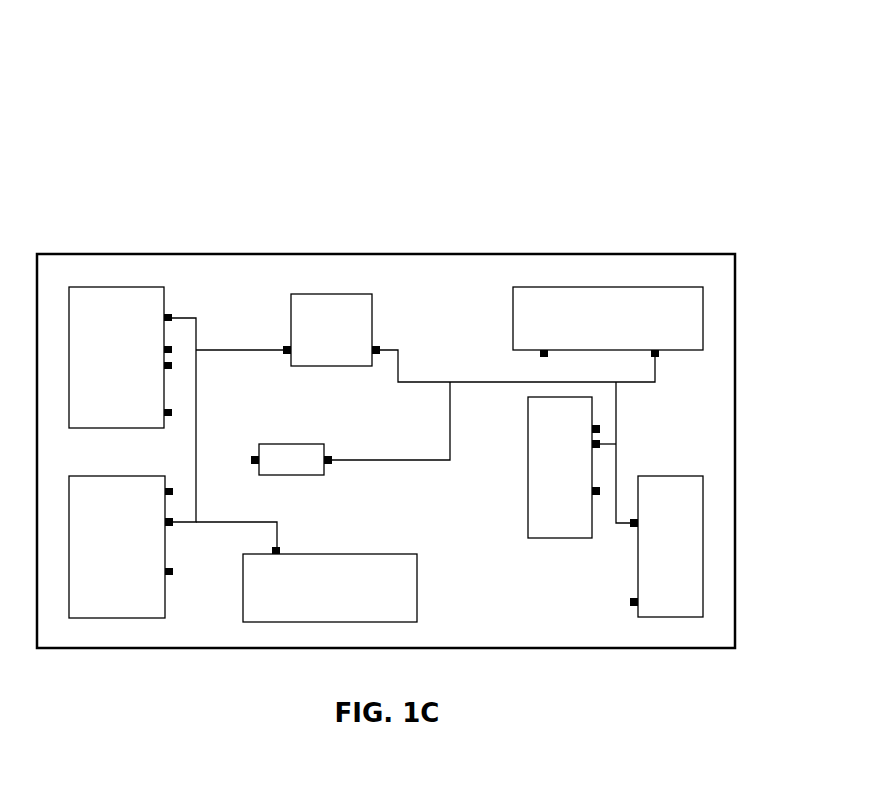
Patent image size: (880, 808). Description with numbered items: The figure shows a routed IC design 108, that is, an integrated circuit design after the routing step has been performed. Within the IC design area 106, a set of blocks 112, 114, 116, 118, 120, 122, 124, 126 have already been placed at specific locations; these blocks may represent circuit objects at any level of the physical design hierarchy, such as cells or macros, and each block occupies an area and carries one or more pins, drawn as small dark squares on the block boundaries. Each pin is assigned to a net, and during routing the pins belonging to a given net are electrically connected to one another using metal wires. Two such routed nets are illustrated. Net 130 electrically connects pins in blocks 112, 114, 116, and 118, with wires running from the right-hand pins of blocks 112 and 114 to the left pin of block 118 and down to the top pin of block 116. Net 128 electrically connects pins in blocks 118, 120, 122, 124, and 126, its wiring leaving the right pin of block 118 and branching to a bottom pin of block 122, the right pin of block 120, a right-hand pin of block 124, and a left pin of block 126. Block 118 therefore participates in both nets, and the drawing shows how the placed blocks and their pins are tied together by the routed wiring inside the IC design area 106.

The IC design area 106 is at (543, 254).
The routed IC design 108 is at (163, 110).
The block 112 is at (120, 357).
The block 114 is at (121, 547).
The block 116 is at (330, 584).
The block 118 is at (331, 330).
The block 120 is at (291, 459).
The block 122 is at (608, 322).
The block 124 is at (564, 467).
The block 126 is at (666, 546).
The net 128 is at (494, 381).
The net 130 is at (197, 335).